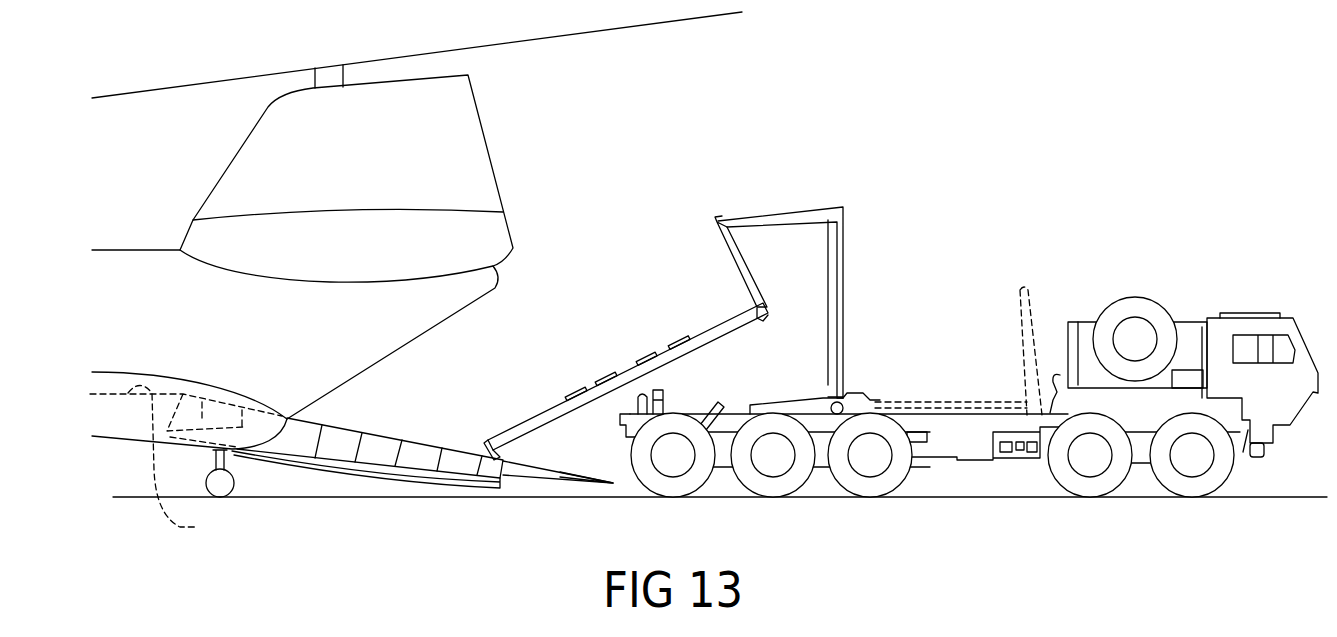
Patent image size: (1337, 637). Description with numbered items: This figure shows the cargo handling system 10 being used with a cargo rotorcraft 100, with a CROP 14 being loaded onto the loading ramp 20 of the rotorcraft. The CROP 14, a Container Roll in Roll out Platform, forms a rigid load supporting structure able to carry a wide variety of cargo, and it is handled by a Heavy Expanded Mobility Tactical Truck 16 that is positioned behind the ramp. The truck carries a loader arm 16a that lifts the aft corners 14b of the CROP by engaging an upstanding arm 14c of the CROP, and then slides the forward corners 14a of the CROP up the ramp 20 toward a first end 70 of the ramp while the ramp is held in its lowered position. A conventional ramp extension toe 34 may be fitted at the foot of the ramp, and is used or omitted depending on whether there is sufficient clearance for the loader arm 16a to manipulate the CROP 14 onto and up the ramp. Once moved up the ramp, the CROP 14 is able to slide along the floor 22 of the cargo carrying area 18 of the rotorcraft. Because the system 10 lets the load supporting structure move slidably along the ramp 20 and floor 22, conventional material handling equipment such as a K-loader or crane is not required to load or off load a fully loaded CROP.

The system 10 is at (376, 422).
The CROP 14 is at (662, 353).
The forward corners 14a is at (488, 446).
The aft corners 14b is at (758, 319).
The upstanding arm 14c is at (717, 236).
The Heavy Expanded Mobility Tactical Truck 16 is at (1244, 290).
The loader arm 16a is at (798, 215).
The cargo carrying area 18 is at (102, 383).
The ramp 20 is at (327, 462).
The floor 22 is at (176, 466).
The ramp extension toe 34 is at (578, 481).
The first end 70 is at (503, 472).
The cargo rotorcraft 100 is at (490, 135).